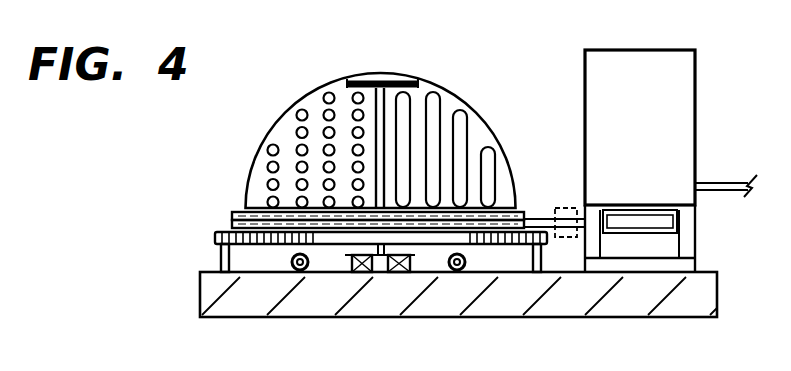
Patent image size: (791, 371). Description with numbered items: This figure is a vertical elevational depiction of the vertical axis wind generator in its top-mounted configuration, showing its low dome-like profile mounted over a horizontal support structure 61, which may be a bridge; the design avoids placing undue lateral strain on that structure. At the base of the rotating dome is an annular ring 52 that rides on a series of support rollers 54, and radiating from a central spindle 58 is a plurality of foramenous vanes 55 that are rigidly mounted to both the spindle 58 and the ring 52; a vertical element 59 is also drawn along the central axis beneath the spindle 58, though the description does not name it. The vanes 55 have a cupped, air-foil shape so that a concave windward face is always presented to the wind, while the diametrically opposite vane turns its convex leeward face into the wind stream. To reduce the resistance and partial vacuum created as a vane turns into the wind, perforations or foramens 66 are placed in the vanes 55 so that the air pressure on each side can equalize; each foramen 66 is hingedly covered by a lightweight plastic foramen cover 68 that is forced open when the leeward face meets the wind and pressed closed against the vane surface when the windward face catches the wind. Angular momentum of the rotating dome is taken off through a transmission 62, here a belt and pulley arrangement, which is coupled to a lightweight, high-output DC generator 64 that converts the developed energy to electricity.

The annular ring 52 is at (228, 233).
The support rollers 54 is at (298, 262).
The foramenous vanes 55 is at (452, 102).
The central spindle 58 is at (378, 79).
The support rod 59 is at (386, 105).
The horizontal support structure 61 is at (656, 293).
The transmission 62 is at (562, 206).
The generator 64 is at (656, 138).
The foramens 66 is at (329, 132).
The foramen cover 68 is at (430, 140).